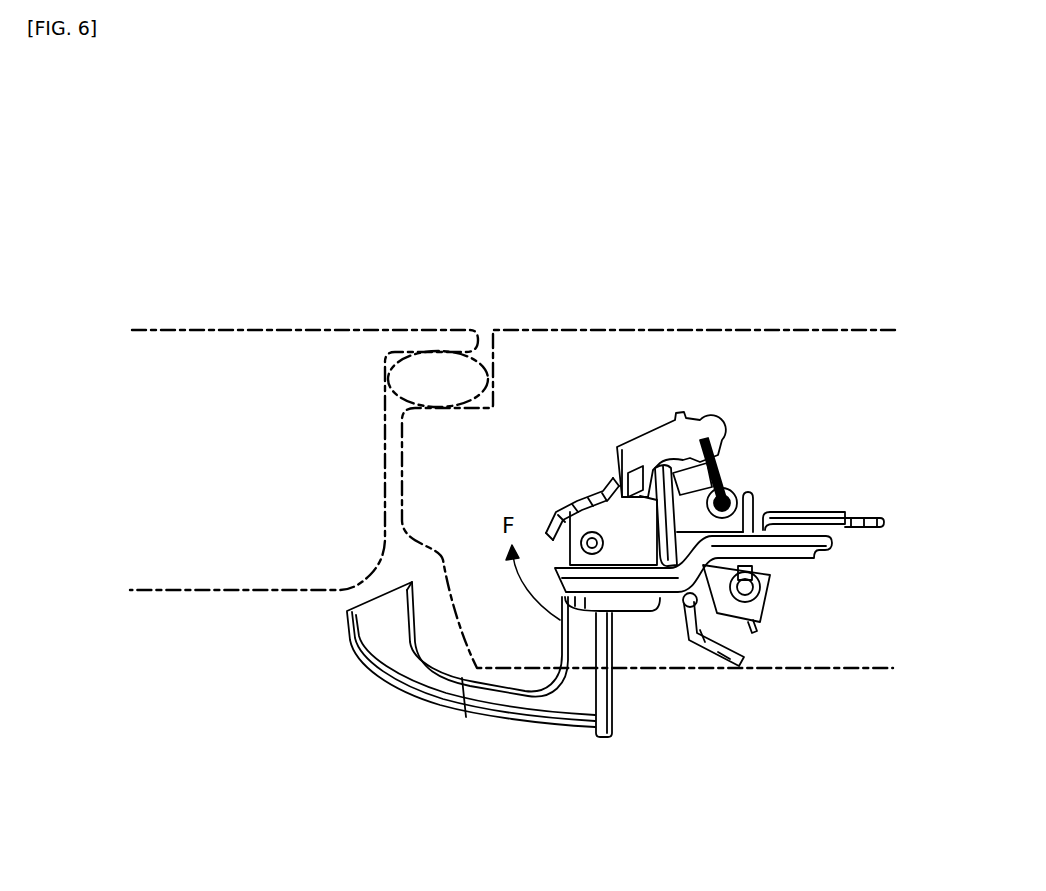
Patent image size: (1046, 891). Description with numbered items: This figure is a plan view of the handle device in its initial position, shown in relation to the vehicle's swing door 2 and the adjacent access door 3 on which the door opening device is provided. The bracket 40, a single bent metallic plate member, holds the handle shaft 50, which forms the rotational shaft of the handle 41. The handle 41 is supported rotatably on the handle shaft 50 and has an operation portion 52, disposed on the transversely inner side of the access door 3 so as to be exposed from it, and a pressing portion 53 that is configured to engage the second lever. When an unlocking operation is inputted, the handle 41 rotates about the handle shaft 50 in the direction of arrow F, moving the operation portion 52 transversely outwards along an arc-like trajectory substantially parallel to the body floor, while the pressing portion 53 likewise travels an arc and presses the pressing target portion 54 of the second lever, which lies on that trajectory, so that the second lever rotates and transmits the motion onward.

The swing door 2 is at (215, 328).
The access door 3 is at (836, 328).
The bracket 40 is at (799, 565).
The handle 41 is at (585, 736).
The handle shaft 50 is at (590, 538).
The operation portion 52 is at (368, 664).
The pressing portion 53 is at (663, 440).
The pressing target portion 54 is at (688, 480).